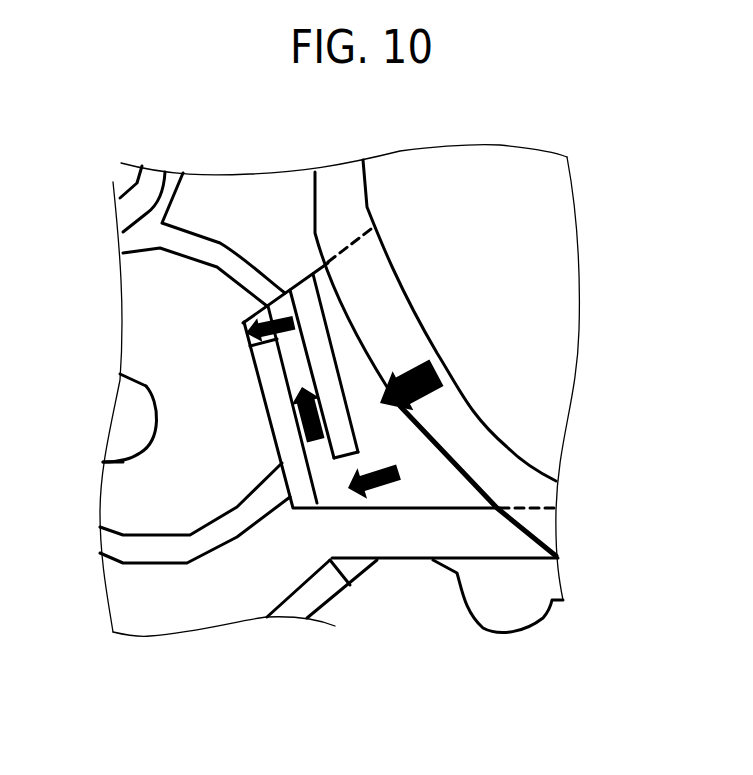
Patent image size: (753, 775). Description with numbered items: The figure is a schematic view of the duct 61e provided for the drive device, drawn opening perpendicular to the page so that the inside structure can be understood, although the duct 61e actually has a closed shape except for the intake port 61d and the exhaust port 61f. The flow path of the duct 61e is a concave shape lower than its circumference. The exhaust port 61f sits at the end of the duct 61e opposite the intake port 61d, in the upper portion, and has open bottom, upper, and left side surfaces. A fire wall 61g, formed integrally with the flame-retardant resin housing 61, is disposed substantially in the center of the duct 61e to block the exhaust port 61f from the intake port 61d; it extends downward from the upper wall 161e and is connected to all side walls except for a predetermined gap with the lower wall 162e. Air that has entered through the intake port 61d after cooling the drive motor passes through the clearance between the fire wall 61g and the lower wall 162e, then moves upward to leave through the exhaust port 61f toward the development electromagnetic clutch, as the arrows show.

The resin housing 61 is at (530, 292).
The intake port 61d is at (535, 505).
The duct 61e is at (335, 488).
The exhaust port 61f is at (243, 323).
The fire wall 61g is at (308, 310).
The wall 161e is at (307, 308).
The wall 162e is at (415, 501).